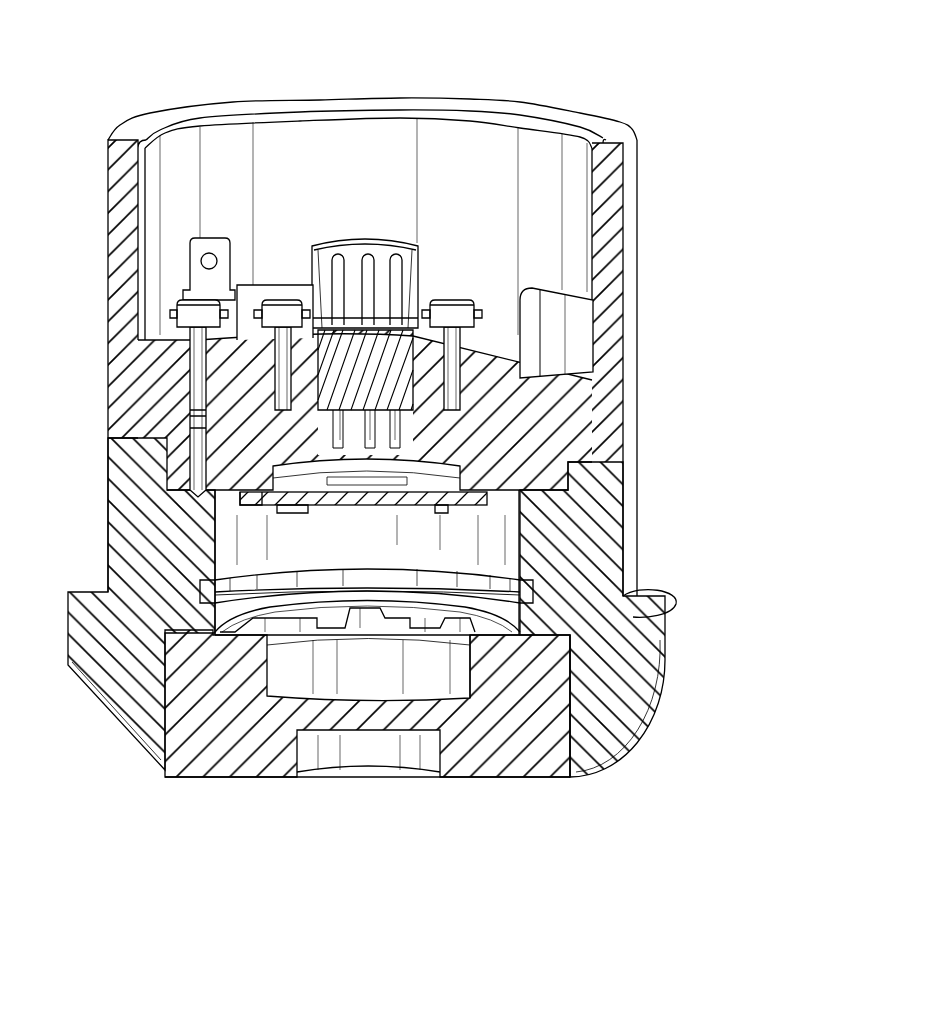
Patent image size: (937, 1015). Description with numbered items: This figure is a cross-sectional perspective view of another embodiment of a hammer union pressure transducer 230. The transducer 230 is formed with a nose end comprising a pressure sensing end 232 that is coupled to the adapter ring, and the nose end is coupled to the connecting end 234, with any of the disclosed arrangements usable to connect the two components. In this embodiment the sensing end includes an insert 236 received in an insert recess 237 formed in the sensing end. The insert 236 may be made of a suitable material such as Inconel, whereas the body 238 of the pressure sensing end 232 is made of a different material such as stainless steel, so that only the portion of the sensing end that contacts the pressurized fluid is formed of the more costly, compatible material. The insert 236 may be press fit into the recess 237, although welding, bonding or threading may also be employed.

The hammer union pressure transducer 230 is at (163, 70).
The pressure sensing end 232 is at (197, 875).
The connecting end 234 is at (624, 191).
The insert 236 is at (183, 777).
The insert recess 237 is at (570, 735).
The body 238 is at (147, 757).